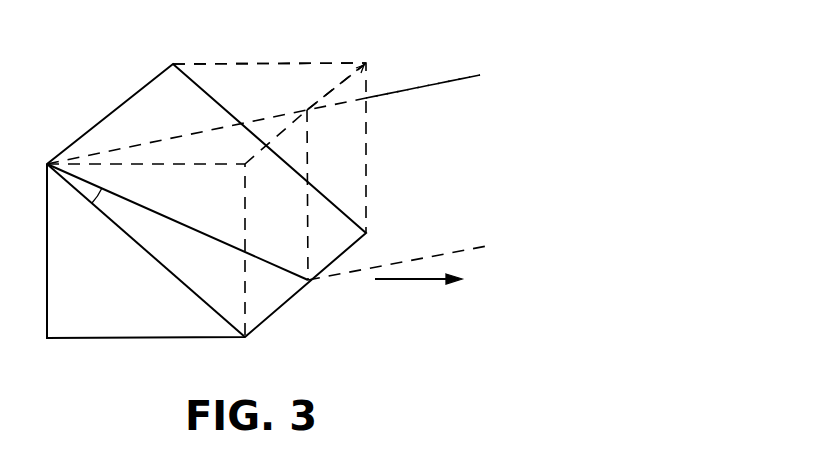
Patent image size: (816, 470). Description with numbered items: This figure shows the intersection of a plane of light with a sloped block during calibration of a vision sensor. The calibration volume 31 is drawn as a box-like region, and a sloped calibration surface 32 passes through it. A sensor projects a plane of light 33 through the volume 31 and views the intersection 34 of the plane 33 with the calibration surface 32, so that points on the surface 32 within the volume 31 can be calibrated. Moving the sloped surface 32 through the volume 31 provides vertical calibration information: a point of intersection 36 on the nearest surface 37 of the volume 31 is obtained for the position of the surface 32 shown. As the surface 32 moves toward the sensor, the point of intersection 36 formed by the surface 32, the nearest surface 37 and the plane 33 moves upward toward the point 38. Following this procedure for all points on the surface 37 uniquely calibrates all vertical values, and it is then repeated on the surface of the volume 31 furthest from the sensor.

The volume 31 is at (252, 62).
The calibration surface 32 is at (128, 122).
The plane of light 33 is at (425, 118).
The intersection 34 is at (92, 203).
The point of intersection 36 is at (308, 283).
The nearest surface 37 is at (352, 85).
The point 38 is at (307, 112).